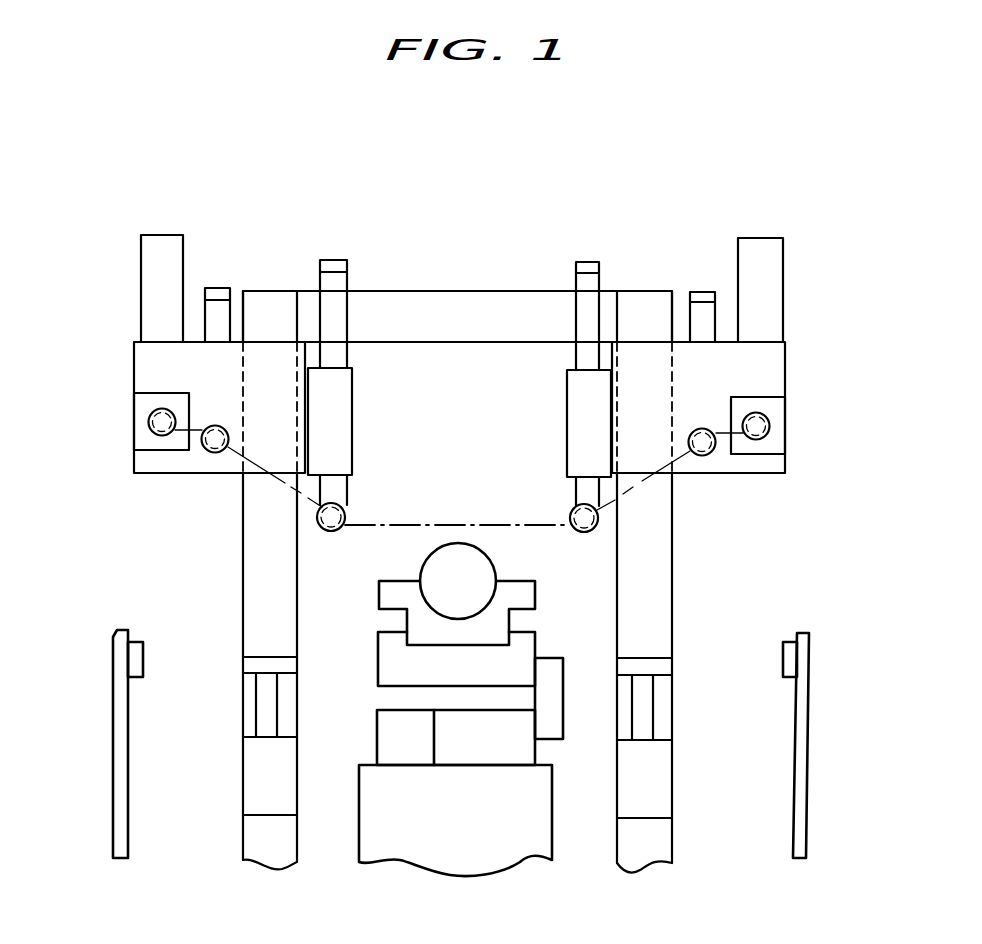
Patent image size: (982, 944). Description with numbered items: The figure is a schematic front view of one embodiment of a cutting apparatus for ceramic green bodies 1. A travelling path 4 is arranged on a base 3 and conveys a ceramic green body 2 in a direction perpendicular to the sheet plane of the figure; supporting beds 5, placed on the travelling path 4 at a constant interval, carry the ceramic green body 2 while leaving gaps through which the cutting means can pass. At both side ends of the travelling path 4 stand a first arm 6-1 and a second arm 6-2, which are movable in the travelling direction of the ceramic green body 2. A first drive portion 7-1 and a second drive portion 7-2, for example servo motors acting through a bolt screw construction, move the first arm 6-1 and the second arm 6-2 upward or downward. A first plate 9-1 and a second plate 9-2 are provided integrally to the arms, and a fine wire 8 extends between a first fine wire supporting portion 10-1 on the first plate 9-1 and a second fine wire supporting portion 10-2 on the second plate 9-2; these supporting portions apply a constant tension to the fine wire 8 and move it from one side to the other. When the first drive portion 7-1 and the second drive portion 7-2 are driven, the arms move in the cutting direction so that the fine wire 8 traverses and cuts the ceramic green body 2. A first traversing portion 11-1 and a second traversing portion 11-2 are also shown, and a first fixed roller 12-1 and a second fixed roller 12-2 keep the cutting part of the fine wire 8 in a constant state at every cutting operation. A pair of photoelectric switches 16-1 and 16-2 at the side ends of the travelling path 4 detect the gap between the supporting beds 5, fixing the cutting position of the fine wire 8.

The cutting apparatus for ceramic green bodies 1 is at (474, 276).
The ceramic green body 2 is at (497, 568).
The base 3 is at (507, 830).
The travelling path 4 is at (567, 707).
The supporting beds 5 is at (390, 600).
The first arm 6-1 is at (258, 602).
The second arm 6-2 is at (640, 612).
The first drive portion 7-1 is at (265, 792).
The second drive portion 7-2 is at (650, 778).
The fine wire 8 is at (468, 522).
The first plate 9-1 is at (157, 372).
The second plate 9-2 is at (777, 370).
The first fine wire supporting portion 10-1 is at (147, 442).
The second fine wire supporting portion 10-2 is at (773, 437).
The first traversing portion 11-1 is at (213, 452).
The second traversing portion 11-2 is at (708, 453).
The first fixed roller 12-1 is at (350, 514).
The second fixed roller 12-2 is at (573, 517).
The photoelectric switch 16-1 is at (115, 640).
The photoelectric switch 16-2 is at (813, 650).